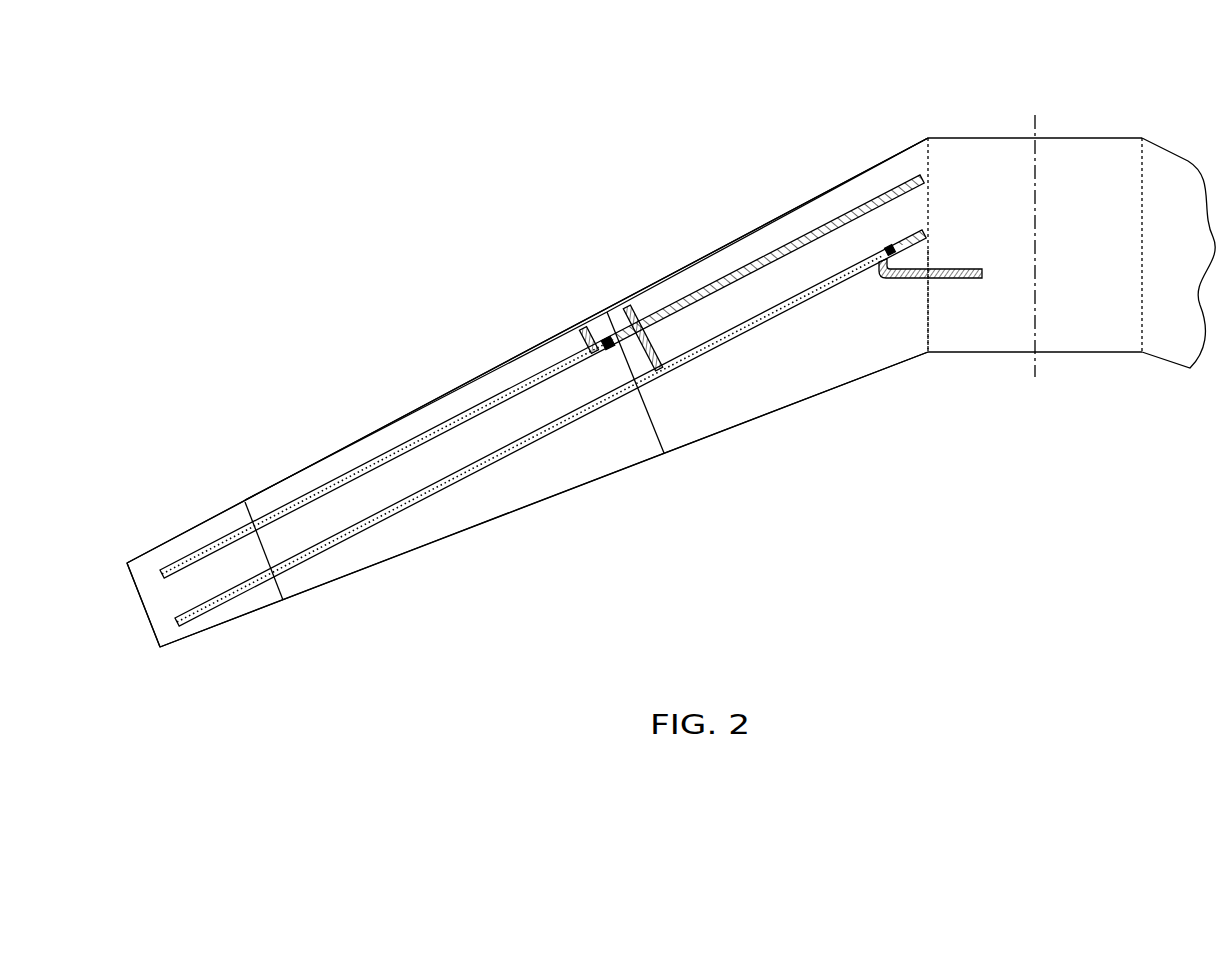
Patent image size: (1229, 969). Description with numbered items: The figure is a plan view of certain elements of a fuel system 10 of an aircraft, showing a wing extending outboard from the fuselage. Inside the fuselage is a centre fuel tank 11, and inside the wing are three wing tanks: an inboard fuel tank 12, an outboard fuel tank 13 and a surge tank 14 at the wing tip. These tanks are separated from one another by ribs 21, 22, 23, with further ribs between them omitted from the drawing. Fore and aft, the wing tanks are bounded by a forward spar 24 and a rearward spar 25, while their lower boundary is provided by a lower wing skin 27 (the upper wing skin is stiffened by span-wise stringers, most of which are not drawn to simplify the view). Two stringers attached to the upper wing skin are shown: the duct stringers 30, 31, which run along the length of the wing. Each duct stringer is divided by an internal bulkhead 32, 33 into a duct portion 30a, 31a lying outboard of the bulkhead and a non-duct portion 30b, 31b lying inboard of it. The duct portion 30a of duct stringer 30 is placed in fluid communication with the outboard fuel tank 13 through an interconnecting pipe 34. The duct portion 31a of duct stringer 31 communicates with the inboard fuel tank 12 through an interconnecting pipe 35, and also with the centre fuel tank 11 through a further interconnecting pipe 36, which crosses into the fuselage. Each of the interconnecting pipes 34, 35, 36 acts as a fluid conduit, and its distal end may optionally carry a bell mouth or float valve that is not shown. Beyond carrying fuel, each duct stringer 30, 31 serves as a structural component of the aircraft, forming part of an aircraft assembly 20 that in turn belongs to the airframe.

The fuel system 10 is at (648, 182).
The centre fuel tank 11 is at (978, 226).
The inboard fuel tank 12 is at (765, 376).
The outboard fuel tank 13 is at (555, 471).
The surge tank 14 is at (188, 594).
The aircraft assembly 20 is at (759, 152).
The rib 21 is at (928, 316).
The rib 22 is at (652, 417).
The rib 23 is at (248, 508).
The forward spar 24 is at (503, 360).
The rearward spar 25 is at (453, 537).
The lower wing skin 27 is at (400, 536).
The duct stringer 30 is at (546, 348).
The duct portion 30a is at (425, 434).
The non-duct portion 30b is at (729, 272).
The duct stringer 31 is at (498, 478).
The duct portion 31a is at (318, 556).
The non-duct portion 31b is at (913, 230).
The internal bulkhead 32 is at (606, 346).
The internal bulkhead 33 is at (888, 247).
The interconnecting pipe 34 is at (585, 330).
The interconnecting pipe 35 is at (609, 337).
The interconnecting pipe 36 is at (953, 280).